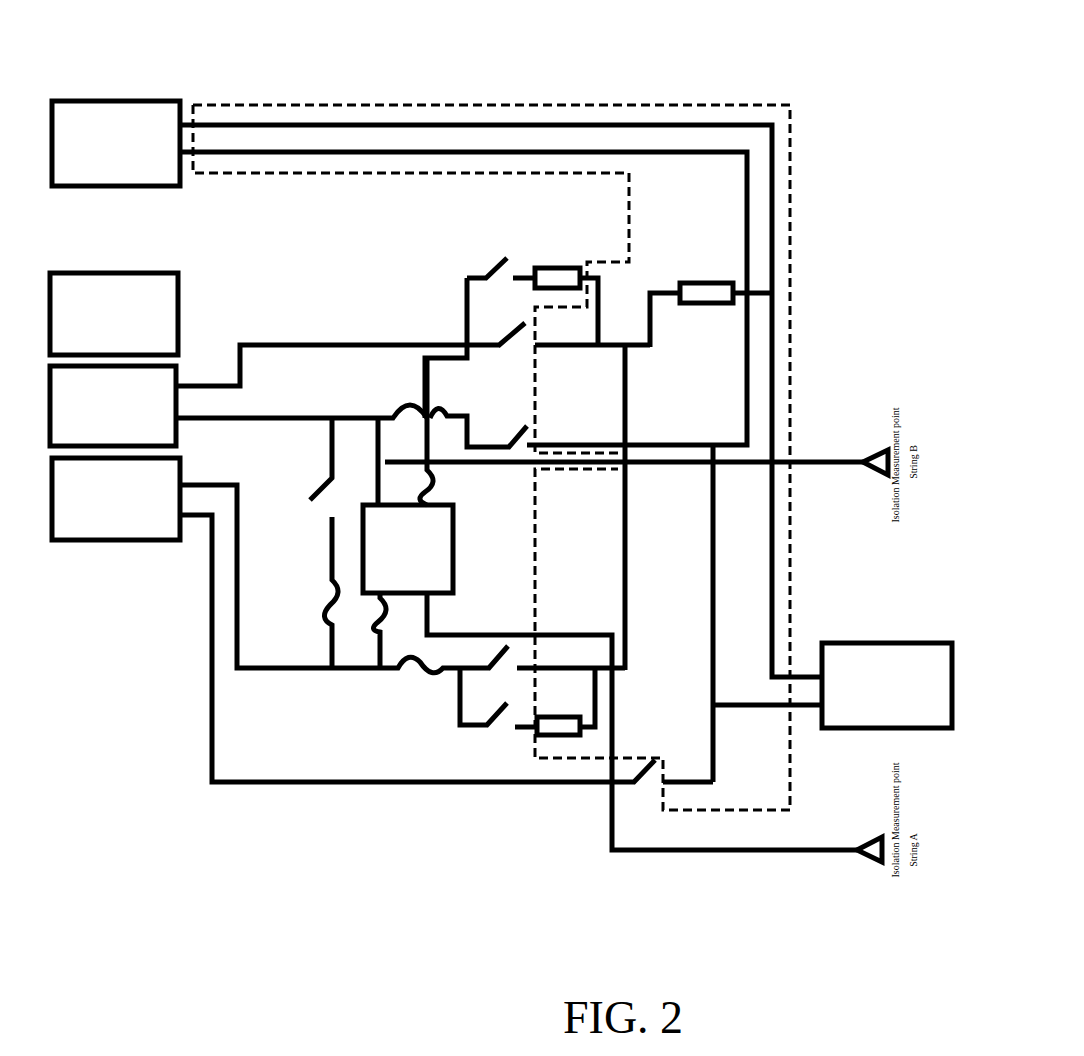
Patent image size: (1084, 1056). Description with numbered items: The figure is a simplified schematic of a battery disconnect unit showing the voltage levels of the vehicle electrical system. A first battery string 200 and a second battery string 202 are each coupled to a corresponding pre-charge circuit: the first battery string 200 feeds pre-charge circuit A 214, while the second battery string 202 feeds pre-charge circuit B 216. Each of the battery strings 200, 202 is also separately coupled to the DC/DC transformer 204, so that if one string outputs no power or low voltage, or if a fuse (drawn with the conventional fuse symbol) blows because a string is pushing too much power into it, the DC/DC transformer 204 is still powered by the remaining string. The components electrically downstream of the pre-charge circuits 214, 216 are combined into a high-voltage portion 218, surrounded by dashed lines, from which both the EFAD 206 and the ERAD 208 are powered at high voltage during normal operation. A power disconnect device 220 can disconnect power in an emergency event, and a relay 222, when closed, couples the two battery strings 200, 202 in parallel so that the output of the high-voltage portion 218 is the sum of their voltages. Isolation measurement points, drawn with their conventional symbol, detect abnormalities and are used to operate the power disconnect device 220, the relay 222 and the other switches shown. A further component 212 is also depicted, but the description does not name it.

The first battery string 200 is at (133, 542).
The second battery string 202 is at (178, 367).
The DC/DC transformer 204 is at (457, 590).
The EFAD 206 is at (93, 100).
The ERAD 208 is at (840, 643).
The DC charge 212 is at (180, 275).
The pre-charge circuit A 214 is at (420, 735).
The pre-charge circuit B 216 is at (497, 219).
The high-voltage portion 218 is at (792, 237).
The power disconnect device (PDD) 220 is at (697, 283).
The relay 222 is at (322, 510).